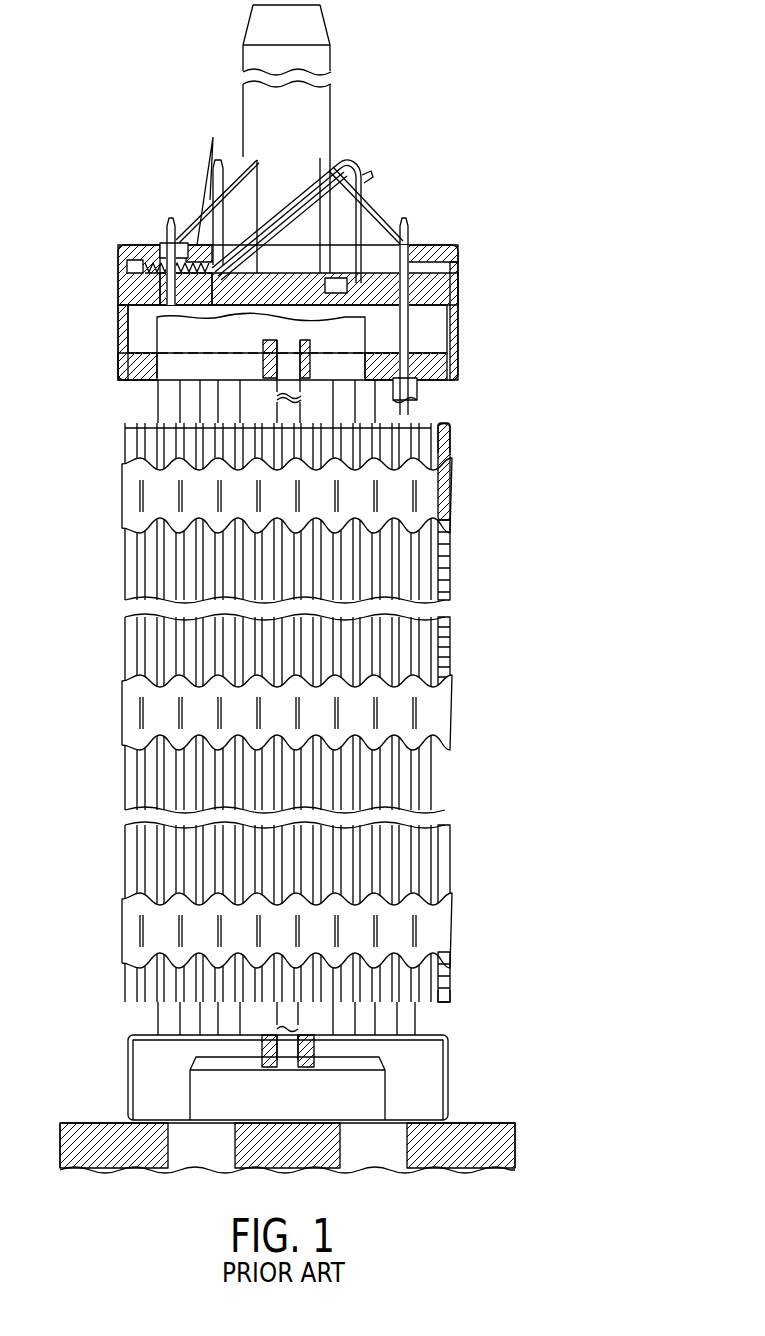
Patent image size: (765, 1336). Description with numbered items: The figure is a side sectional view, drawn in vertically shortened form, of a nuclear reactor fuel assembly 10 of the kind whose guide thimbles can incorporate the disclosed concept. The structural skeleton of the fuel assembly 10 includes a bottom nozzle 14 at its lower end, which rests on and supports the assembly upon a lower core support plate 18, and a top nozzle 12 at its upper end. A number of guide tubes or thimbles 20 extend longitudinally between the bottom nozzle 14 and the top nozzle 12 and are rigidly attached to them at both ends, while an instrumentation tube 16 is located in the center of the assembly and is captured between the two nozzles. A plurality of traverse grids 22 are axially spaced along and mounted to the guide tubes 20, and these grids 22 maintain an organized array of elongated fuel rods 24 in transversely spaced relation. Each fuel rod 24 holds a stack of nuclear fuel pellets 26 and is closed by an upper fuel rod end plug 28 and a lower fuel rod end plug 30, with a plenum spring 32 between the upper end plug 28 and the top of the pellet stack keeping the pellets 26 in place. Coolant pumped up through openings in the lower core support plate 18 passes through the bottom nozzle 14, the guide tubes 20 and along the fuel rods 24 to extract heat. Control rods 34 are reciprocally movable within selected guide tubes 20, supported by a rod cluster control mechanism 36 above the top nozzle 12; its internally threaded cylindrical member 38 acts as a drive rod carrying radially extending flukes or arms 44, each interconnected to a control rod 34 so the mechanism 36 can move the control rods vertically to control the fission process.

The fuel assembly 10 is at (336, 589).
The top nozzle 12 is at (470, 292).
The bottom nozzle 14 is at (466, 1070).
The instrumentation tube 16 is at (279, 1062).
The lower core support plate 18 is at (505, 1124).
The guide tubes or thimbles 20 is at (158, 410).
The traverse grids 22 is at (122, 500).
The fuel rods 24 is at (122, 642).
The nuclear fuel pellets 26 is at (452, 578).
The upper fuel rod end plug 28 is at (452, 432).
The lower fuel rod end plug 30 is at (452, 994).
The plenum spring 32 is at (452, 478).
The control rods 34 is at (410, 352).
The rod cluster control mechanism 36 is at (378, 157).
The internally threaded cylindrical member 38 is at (332, 107).
The radially extending flukes or arms 44 is at (240, 175).